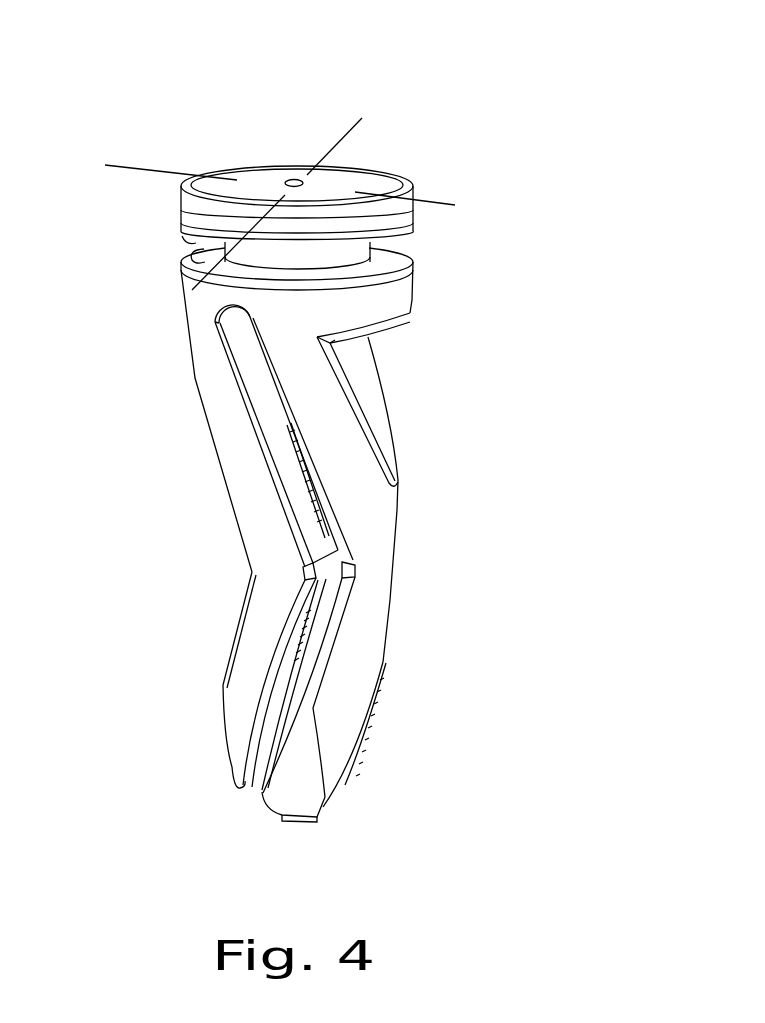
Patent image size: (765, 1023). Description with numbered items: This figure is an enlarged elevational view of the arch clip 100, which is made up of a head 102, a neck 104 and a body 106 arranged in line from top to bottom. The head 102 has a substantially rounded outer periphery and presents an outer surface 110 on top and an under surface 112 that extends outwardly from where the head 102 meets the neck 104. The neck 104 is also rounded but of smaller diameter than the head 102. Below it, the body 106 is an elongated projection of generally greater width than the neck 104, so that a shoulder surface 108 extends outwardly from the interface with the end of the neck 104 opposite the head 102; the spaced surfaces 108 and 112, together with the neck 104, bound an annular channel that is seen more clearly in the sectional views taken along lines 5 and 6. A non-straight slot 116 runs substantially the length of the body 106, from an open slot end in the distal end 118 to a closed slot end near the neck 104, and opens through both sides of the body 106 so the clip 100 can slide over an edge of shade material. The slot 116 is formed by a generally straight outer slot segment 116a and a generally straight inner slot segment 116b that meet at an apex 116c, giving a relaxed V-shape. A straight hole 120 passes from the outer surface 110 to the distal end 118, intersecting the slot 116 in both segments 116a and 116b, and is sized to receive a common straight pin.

The arch clip 100 is at (233, 92).
The head 102 is at (405, 216).
The neck 104 is at (370, 257).
The body 106 is at (397, 302).
The shoulder surface 108 is at (207, 257).
The outer surface 110 is at (256, 177).
The under surface 112 is at (188, 240).
The non-straight slot 116 is at (252, 793).
The outer slot segment 116a is at (290, 712).
The inner slot segment 116b is at (245, 368).
The apex 116c is at (343, 570).
The distal end 118 is at (297, 820).
The straight hole 120 is at (300, 182).
The section line 5- 5 is at (110, 175).
The section line 6- 6 is at (370, 133).